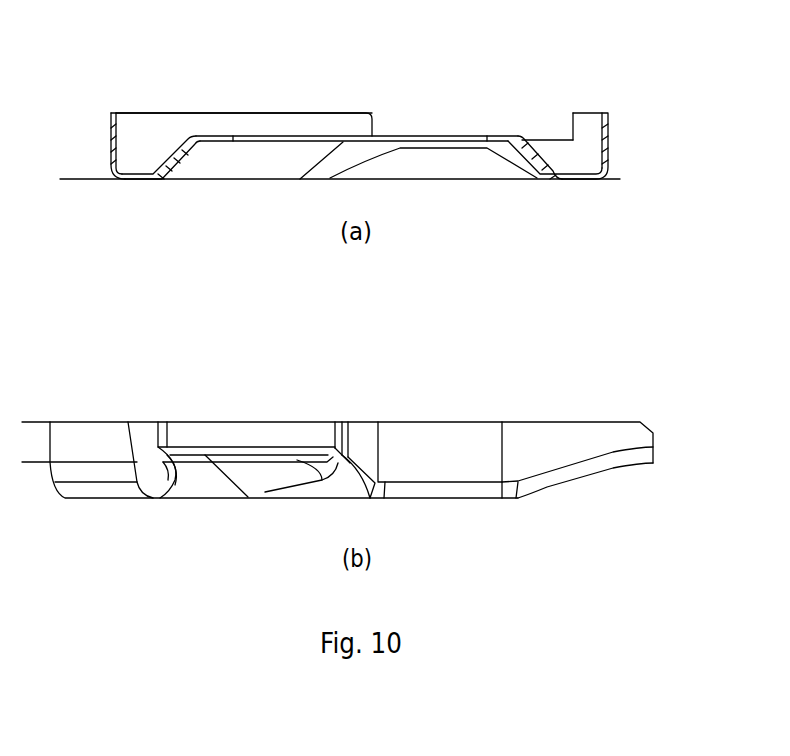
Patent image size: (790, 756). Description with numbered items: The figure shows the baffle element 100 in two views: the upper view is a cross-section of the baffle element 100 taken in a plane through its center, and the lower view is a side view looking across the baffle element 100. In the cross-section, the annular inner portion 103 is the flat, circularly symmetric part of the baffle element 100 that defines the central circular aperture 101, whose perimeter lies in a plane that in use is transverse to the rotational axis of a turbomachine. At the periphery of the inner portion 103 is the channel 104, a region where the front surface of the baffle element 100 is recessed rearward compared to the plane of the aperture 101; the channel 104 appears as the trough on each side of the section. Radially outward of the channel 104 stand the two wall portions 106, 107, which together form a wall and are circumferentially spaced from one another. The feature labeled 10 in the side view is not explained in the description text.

The housing / carrier part 100 is at (196, 71).
The plate portion 101 is at (407, 136).
The raised block portion 103 is at (213, 137).
The trough / channel 104 is at (150, 172).
The left side wall 106 is at (112, 141).
The right side wall 107 is at (610, 138).
The pocket / receptacle 10 is at (248, 447).